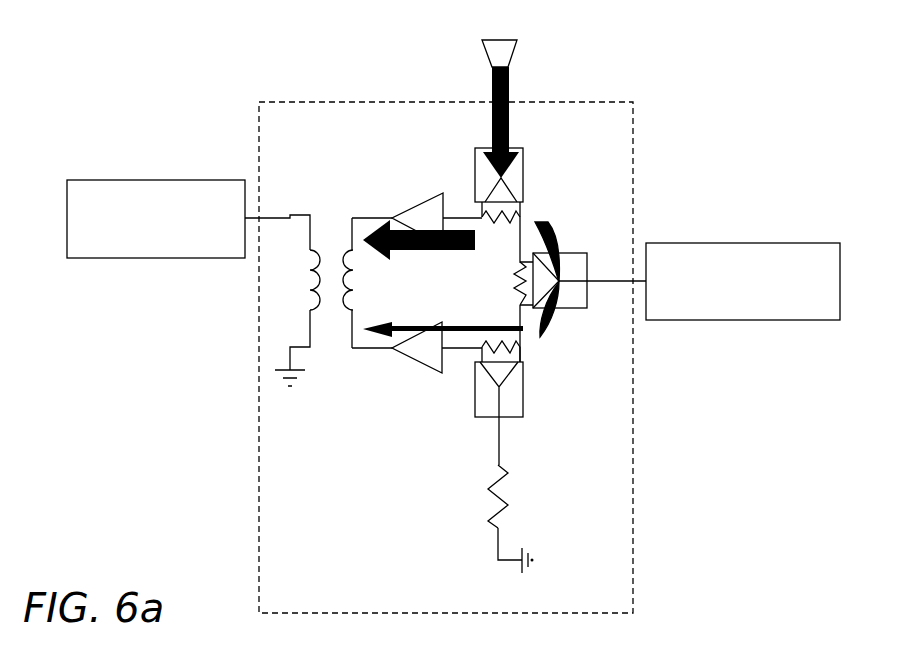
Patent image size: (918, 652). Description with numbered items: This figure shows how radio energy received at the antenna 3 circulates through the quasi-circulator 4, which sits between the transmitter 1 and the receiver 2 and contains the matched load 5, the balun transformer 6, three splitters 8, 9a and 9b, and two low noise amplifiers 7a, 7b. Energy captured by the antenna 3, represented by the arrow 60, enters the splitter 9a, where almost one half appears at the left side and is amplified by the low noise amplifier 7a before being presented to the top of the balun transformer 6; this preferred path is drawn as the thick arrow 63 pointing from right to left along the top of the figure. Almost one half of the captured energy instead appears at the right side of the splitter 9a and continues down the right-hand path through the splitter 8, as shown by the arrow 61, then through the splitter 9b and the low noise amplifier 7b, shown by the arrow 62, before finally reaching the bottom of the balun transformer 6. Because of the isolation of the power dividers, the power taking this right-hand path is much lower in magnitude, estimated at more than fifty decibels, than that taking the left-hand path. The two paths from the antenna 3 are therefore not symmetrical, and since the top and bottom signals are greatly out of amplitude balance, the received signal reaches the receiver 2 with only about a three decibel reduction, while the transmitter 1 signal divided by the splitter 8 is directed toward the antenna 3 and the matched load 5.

The transmitter 1 is at (696, 243).
The receiver 2 is at (175, 180).
The antenna 3 is at (509, 43).
The quasi-circulator 4 is at (585, 102).
The matched load 5 is at (517, 462).
The balun transformer 6 is at (294, 318).
The amplifier 7a is at (412, 186).
The amplifier 7b is at (415, 385).
The 3 dB splitter 8 is at (575, 272).
The 3 dB splitter 9a is at (549, 237).
The 3 dB splitter 9b is at (551, 324).
The arrow 60 is at (517, 120).
The arrow 61 is at (557, 232).
The arrow 62 is at (458, 325).
The arrow 63 is at (413, 253).